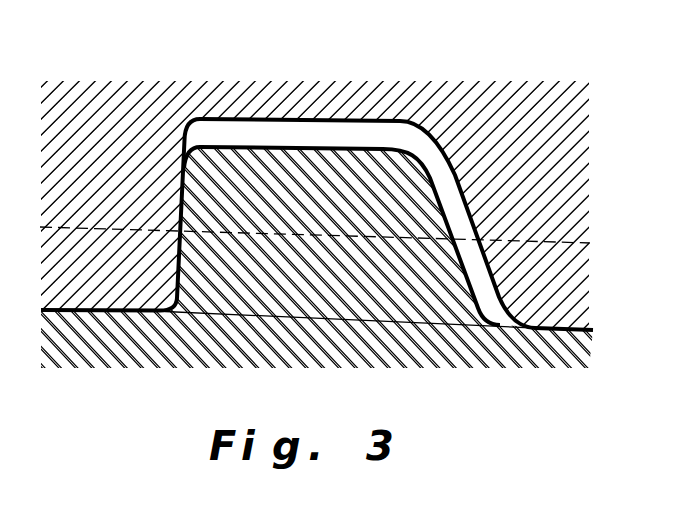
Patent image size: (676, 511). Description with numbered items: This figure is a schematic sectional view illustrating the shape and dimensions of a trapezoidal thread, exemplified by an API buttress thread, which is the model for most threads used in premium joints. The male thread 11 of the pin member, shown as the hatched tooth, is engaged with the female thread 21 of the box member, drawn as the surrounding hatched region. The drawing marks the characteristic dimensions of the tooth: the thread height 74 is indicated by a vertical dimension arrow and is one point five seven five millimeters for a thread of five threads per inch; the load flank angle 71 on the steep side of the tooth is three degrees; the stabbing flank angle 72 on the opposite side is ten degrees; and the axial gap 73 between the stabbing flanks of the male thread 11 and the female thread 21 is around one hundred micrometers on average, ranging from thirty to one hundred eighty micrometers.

The male thread 11 is at (338, 256).
The female thread 21 is at (338, 210).
The load flank angle 71 is at (168, 50).
The stabbing flank angle 72 is at (456, 250).
The axial gap 73 is at (398, 252).
The thread height 74 is at (238, 152).